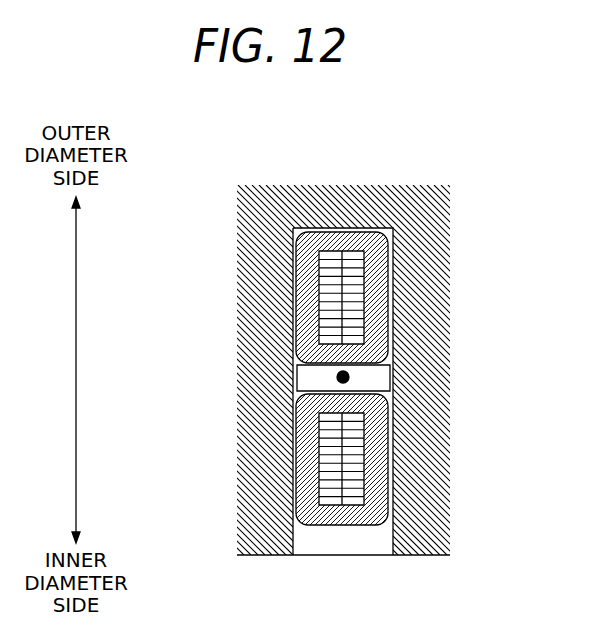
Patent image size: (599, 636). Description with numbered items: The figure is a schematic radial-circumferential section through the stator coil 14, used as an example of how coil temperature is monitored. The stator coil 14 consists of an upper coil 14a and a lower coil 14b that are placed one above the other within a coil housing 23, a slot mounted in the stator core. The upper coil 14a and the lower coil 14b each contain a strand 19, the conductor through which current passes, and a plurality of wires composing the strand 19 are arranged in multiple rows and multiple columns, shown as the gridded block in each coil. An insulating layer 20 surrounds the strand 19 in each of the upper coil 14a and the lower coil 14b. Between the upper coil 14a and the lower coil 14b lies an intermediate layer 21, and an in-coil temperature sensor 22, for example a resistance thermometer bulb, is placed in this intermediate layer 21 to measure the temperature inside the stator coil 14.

The stator coil 14 is at (290, 138).
The upper coil 14a is at (393, 468).
The lower coil 14b is at (393, 282).
The strand 19 is at (330, 297).
The insulating layer 20 is at (358, 242).
The intermediate layer 21 is at (391, 378).
The in-coil temperature sensor 22 is at (337, 378).
The coil housing 23 is at (293, 358).